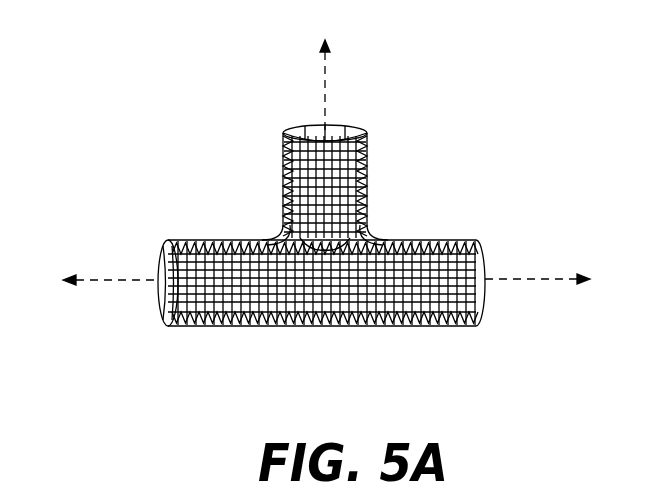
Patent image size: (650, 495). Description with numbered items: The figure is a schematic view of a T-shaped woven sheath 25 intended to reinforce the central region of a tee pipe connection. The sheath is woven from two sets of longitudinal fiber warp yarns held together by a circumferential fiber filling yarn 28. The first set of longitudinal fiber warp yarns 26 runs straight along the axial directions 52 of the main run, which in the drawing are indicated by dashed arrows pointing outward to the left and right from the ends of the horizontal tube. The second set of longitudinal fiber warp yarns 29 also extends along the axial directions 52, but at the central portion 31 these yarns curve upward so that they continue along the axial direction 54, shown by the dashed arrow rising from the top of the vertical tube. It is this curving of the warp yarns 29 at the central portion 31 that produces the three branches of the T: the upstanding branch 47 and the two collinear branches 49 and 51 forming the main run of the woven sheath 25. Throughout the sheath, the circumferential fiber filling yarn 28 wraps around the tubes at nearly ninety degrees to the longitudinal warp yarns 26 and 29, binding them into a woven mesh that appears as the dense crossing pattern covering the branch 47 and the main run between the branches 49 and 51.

The T-shaped woven sheath 25 is at (410, 129).
The longitudinal fiber warp yarns 26 is at (447, 327).
The circumferential fiber filling yarn 28 is at (222, 322).
The longitudinal fiber warp yarns 29 is at (227, 242).
The central portion 31 is at (337, 327).
The branch 47 is at (330, 143).
The branch 49 is at (480, 233).
The branch 51 is at (163, 300).
The axial directions 52 is at (93, 279).
The axial direction 54 is at (323, 78).